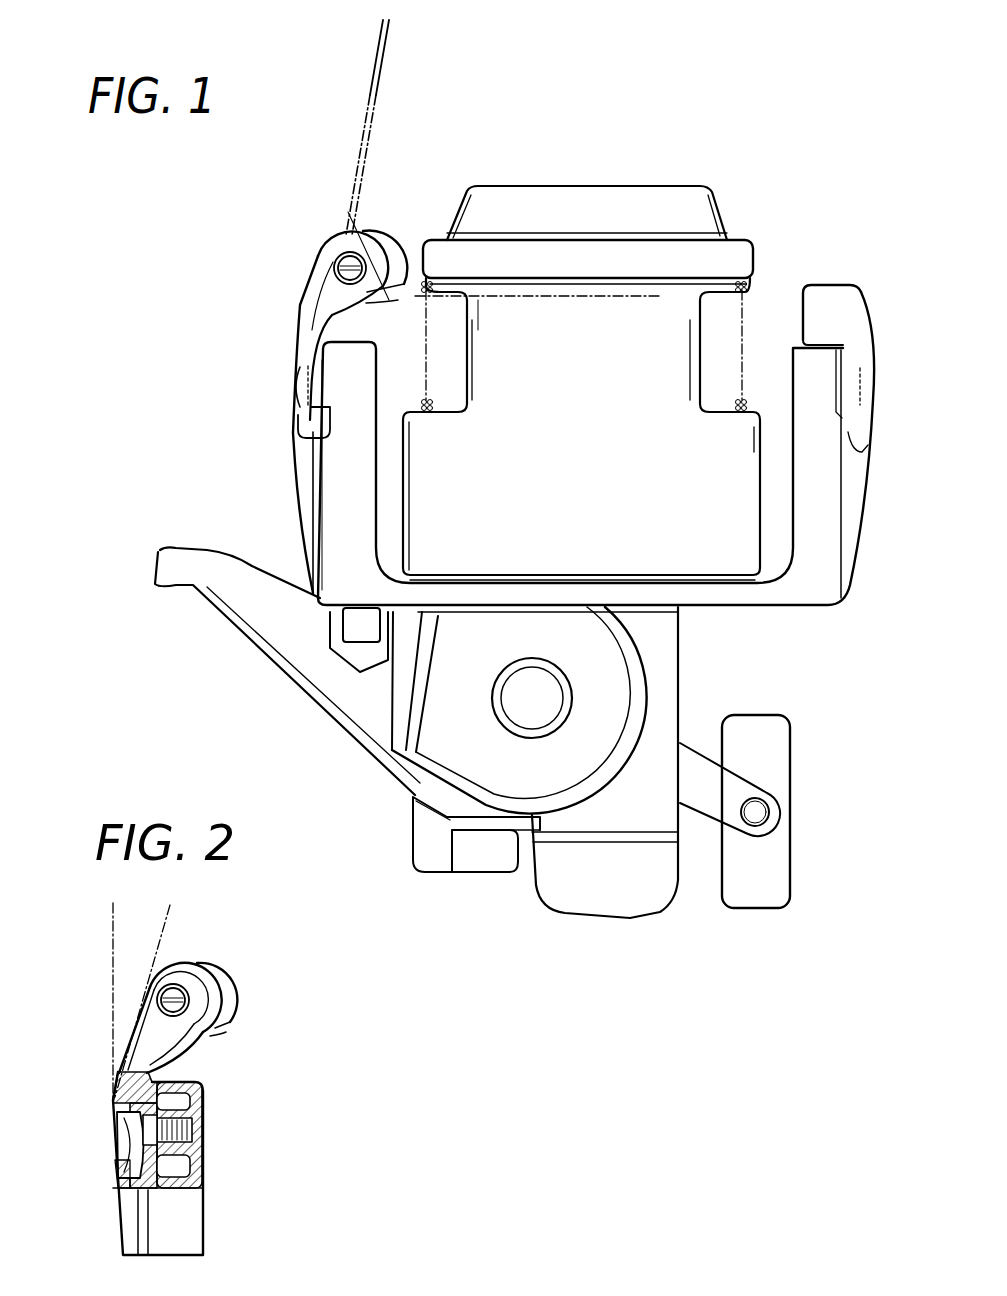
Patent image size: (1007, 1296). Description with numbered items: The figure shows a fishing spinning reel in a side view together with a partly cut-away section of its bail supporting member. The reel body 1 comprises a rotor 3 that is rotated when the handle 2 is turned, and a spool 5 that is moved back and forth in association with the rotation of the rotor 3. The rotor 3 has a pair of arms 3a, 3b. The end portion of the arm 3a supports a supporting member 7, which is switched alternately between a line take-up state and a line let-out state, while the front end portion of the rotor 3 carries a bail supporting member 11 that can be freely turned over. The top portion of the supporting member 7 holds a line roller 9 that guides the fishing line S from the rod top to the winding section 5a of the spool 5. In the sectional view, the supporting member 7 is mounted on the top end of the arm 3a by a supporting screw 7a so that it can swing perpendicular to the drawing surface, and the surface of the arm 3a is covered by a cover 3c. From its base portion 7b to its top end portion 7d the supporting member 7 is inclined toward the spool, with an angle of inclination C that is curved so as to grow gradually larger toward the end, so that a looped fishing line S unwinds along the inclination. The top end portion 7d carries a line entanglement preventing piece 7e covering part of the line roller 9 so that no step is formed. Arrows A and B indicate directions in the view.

In FIG. 1, the reel body 1 is at (748, 172).
In FIG. 1, the handle 2 is at (783, 775).
In FIG. 1, the rotor 3 is at (775, 605).
In FIG. 1, the arm 3a is at (330, 540).
In FIG. 2, the arm 3a is at (192, 1218).
In FIG. 1, the arm 3b is at (830, 525).
In FIG. 2, the cover 3c is at (118, 1213).
In FIG. 1, the spool 5 is at (745, 256).
In FIG. 1, the winding section 5a is at (633, 315).
In FIG. 1, the supporting member 7 is at (320, 290).
In FIG. 2, the supporting member 7 is at (120, 1088).
In FIG. 2, the supporting screw 7a is at (196, 1130).
In FIG. 1, the base portion 7b is at (283, 393).
In FIG. 2, the base portion 7b is at (108, 1142).
In FIG. 1, the top end portion 7d is at (316, 238).
In FIG. 2, the top end portion 7d is at (242, 973).
In FIG. 1, the line entanglement preventing piece 7e is at (400, 250).
In FIG. 2, the line entanglement preventing piece 7e is at (238, 1000).
In FIG. 1, the line roller 9 is at (348, 226).
In FIG. 2, the line roller 9 is at (207, 1022).
In FIG. 1, the bail supporting member 11 is at (852, 297).
In FIG. 1, the fishing line S is at (372, 66).
In FIG. 1, the direction A is at (238, 362).
In FIG. 1, the direction B is at (473, 133).
In FIG. 2, the angle of inclination C is at (160, 913).